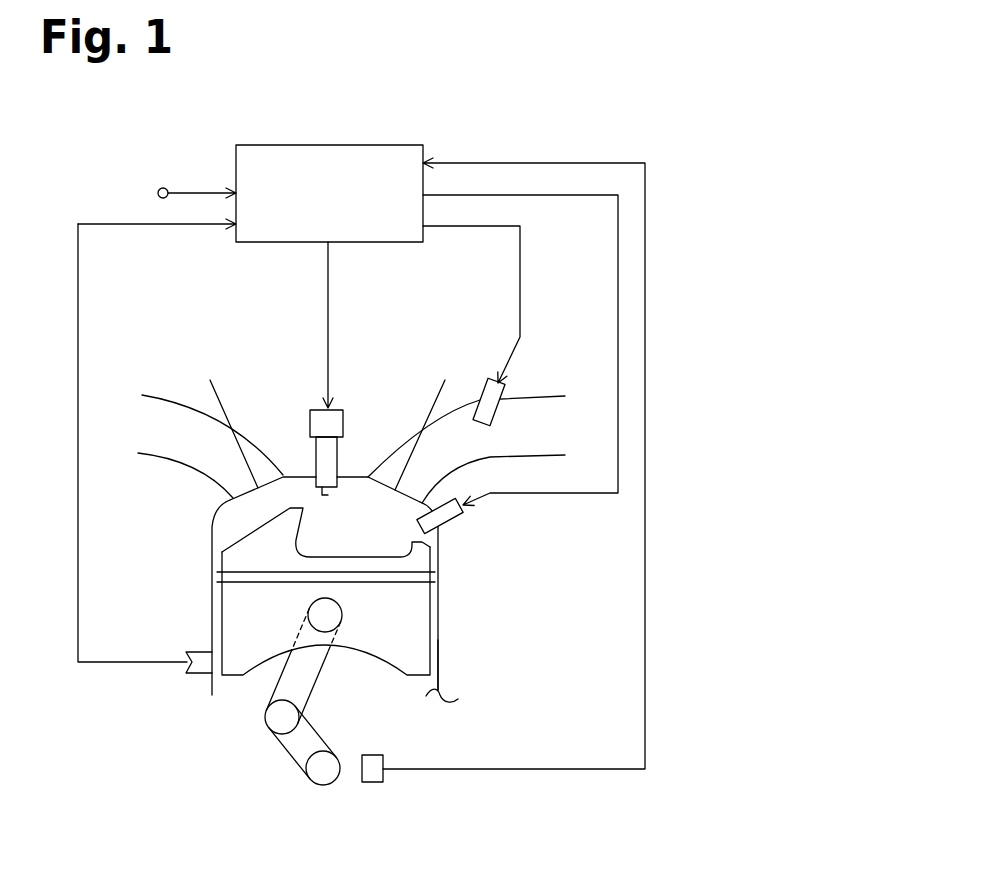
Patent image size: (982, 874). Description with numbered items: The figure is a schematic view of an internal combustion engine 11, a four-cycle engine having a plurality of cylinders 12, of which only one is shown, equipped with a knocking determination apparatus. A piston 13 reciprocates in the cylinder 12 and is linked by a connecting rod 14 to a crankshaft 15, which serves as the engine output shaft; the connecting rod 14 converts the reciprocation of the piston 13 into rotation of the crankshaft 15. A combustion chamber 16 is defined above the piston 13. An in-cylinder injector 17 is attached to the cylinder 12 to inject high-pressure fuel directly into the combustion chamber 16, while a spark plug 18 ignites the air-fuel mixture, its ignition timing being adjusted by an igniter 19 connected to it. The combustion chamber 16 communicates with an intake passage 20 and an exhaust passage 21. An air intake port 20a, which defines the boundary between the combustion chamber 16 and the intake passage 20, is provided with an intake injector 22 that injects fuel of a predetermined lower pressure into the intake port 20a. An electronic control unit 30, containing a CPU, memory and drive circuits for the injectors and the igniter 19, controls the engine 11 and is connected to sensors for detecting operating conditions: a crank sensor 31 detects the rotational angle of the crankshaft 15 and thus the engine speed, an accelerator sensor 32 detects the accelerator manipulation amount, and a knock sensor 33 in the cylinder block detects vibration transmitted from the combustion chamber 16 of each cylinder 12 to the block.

The internal combustion engine 11 is at (483, 598).
The cylinder 12 is at (468, 679).
The piston 13 is at (238, 602).
The connecting rod 14 is at (310, 680).
The crankshaft 15 is at (310, 783).
The combustion chamber 16 is at (385, 533).
The in-cylinder injector 17 is at (457, 525).
The spark plug 18 is at (315, 462).
The igniter 19 is at (345, 424).
The intake passage 20 is at (520, 453).
The air intake port 20a is at (458, 410).
The exhaust passage 21 is at (167, 452).
The intake injector 22 is at (510, 392).
The electronic control unit 30 is at (327, 143).
The crank sensor 31 is at (373, 783).
The accelerator sensor 32 is at (163, 188).
The knock sensor 33 is at (197, 676).